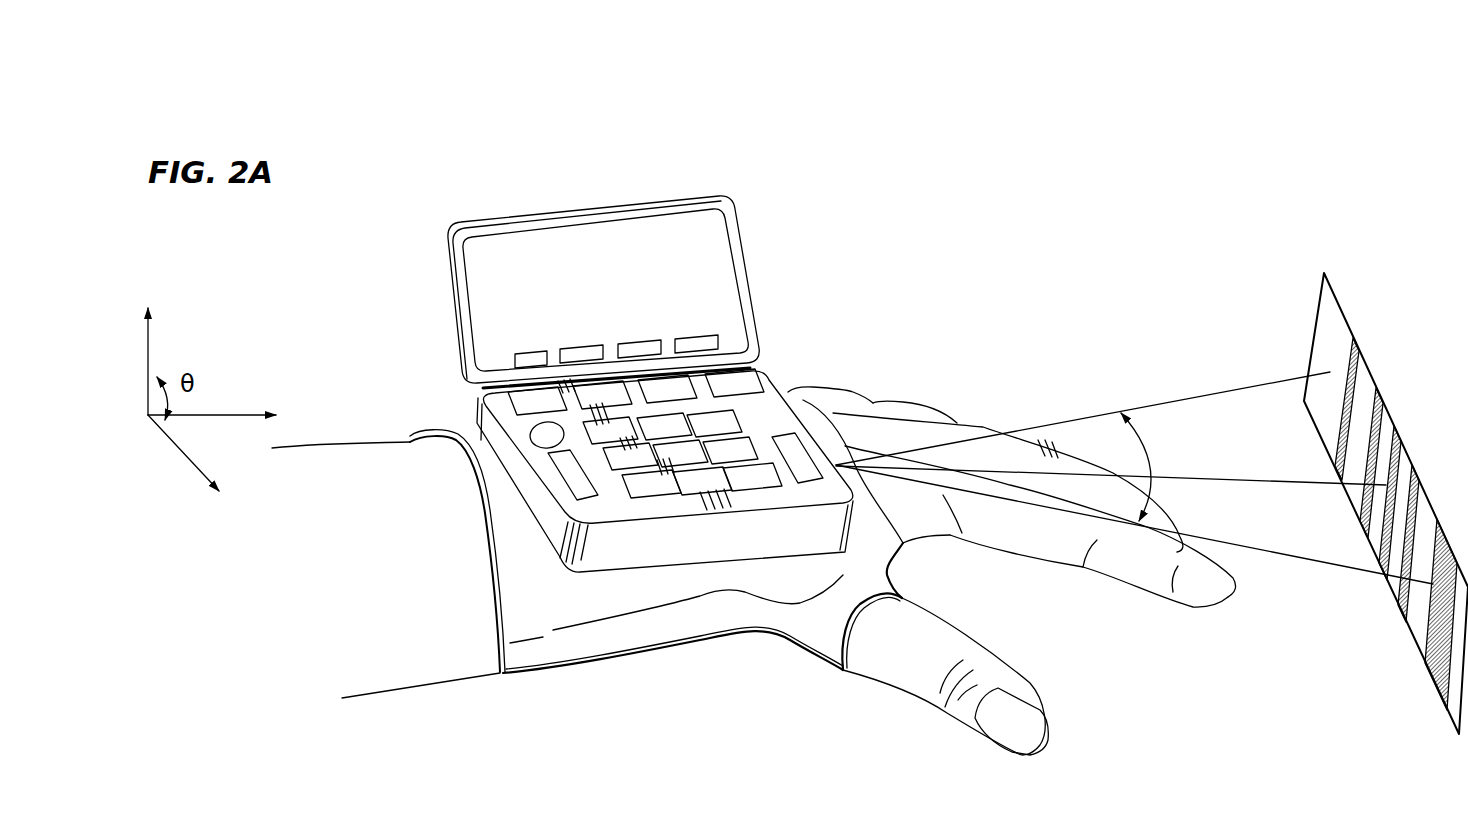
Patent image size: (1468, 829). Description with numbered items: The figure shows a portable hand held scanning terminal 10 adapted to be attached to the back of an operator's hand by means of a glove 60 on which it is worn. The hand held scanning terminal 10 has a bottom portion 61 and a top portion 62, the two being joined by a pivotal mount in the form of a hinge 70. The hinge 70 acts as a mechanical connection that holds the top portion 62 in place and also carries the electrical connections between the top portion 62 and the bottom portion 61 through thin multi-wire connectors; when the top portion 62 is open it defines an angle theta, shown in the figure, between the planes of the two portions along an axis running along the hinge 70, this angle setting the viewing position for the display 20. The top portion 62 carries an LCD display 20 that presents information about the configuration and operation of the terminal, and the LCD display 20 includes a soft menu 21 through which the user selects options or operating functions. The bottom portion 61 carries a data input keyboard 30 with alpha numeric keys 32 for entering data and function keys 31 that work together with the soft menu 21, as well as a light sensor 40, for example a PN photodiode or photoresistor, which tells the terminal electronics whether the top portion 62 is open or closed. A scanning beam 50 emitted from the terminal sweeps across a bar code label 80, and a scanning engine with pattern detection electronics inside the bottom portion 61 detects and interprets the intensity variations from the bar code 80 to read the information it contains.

The hand held scanning terminal 10 is at (574, 176).
The LCD display 20 is at (603, 289).
The soft menu 21 is at (513, 360).
The data input keyboard 30 is at (618, 538).
The function keys 31 is at (518, 401).
The alpha numeric keys 32 is at (575, 490).
The light sensor 40 is at (530, 437).
The scanning beam 50 is at (1148, 443).
The glove 60 is at (793, 623).
The bottom portion 61 is at (812, 533).
The top portion 62 is at (450, 268).
The hinge 70 is at (758, 361).
The bar code label 80 is at (1446, 686).